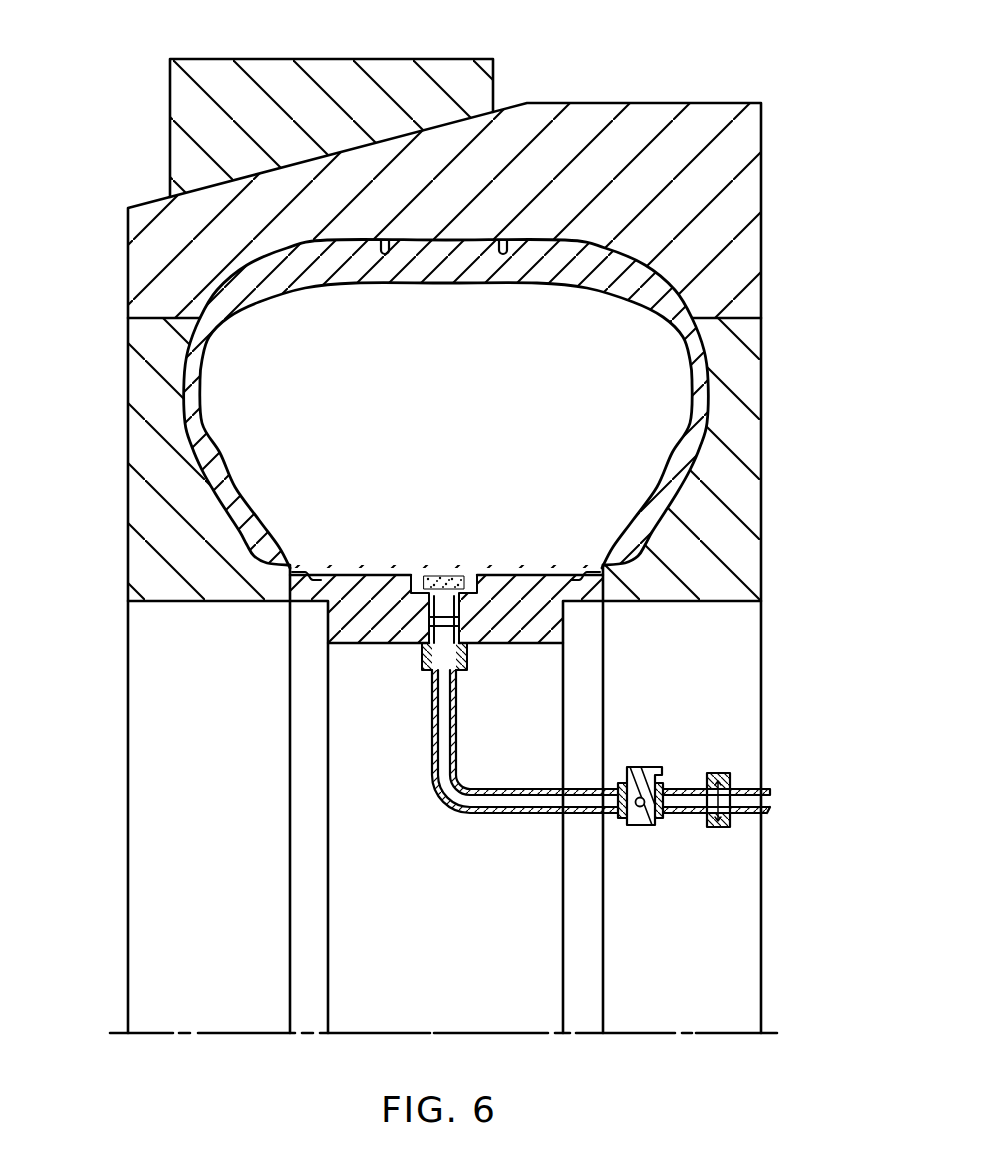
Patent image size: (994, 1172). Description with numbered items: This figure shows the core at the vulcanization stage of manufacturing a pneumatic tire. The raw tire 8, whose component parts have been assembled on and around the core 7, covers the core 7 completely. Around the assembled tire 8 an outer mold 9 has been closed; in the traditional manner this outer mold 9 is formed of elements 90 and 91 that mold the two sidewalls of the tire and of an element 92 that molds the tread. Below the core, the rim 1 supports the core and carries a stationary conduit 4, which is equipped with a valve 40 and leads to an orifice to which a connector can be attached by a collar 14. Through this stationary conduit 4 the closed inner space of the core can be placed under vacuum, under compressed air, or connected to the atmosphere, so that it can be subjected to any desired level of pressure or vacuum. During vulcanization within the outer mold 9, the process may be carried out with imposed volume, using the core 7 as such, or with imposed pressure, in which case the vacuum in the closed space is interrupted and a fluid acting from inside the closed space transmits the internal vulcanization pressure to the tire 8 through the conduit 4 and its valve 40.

The outer mold 9 is at (718, 93).
The tread molding element 92 is at (742, 153).
The raw tire 8 is at (655, 297).
The sidewall molding element 90 is at (142, 383).
The core 7 is at (653, 430).
The sidewall molding element 91 is at (740, 505).
The rim 1 is at (338, 615).
The stationary conduit 4 is at (433, 717).
The valve 40 is at (648, 768).
The collar 14 is at (730, 775).